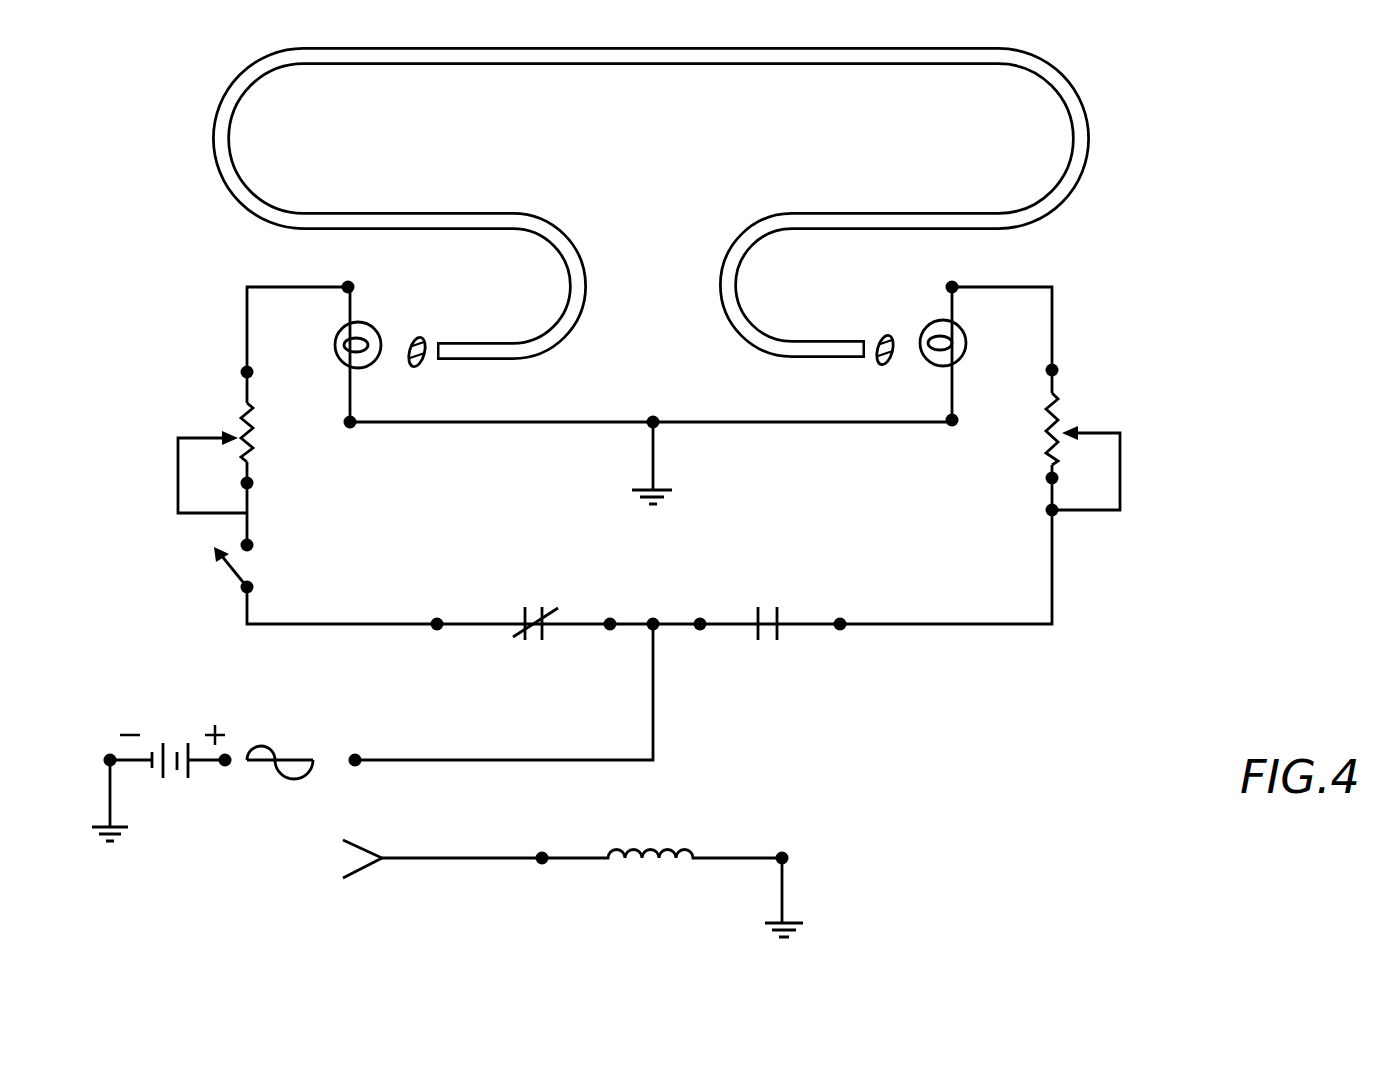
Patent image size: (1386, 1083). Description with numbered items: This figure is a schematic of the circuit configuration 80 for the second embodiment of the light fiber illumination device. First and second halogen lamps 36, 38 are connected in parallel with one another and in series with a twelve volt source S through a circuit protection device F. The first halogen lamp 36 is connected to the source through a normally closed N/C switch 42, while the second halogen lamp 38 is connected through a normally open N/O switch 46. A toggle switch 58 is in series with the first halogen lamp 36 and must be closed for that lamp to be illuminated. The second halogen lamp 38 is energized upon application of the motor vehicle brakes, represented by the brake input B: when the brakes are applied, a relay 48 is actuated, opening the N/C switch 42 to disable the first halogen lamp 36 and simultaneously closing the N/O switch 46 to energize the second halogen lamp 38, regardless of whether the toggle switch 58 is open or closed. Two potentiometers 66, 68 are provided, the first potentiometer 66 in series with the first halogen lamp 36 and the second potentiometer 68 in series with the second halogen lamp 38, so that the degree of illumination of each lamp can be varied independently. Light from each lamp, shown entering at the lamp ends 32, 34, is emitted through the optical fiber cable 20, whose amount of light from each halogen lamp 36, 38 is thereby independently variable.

The circuit arrangement 80 is at (152, 230).
The optical fiber cable 20 is at (252, 184).
The lamp 32 is at (425, 362).
The lamp 34 is at (878, 362).
The first halogen lamp 36 is at (370, 323).
The second halogen lamp 38 is at (930, 324).
The N/C switch 42 is at (545, 613).
The N/O switch 46 is at (778, 612).
The relay 48 is at (650, 842).
The toggle switch 58 is at (227, 573).
The first potentiometer 66 is at (248, 438).
The second potentiometer 68 is at (1047, 433).
The 12 volt source S is at (178, 748).
The circuit protection device F is at (273, 742).
The input terminal B is at (347, 859).